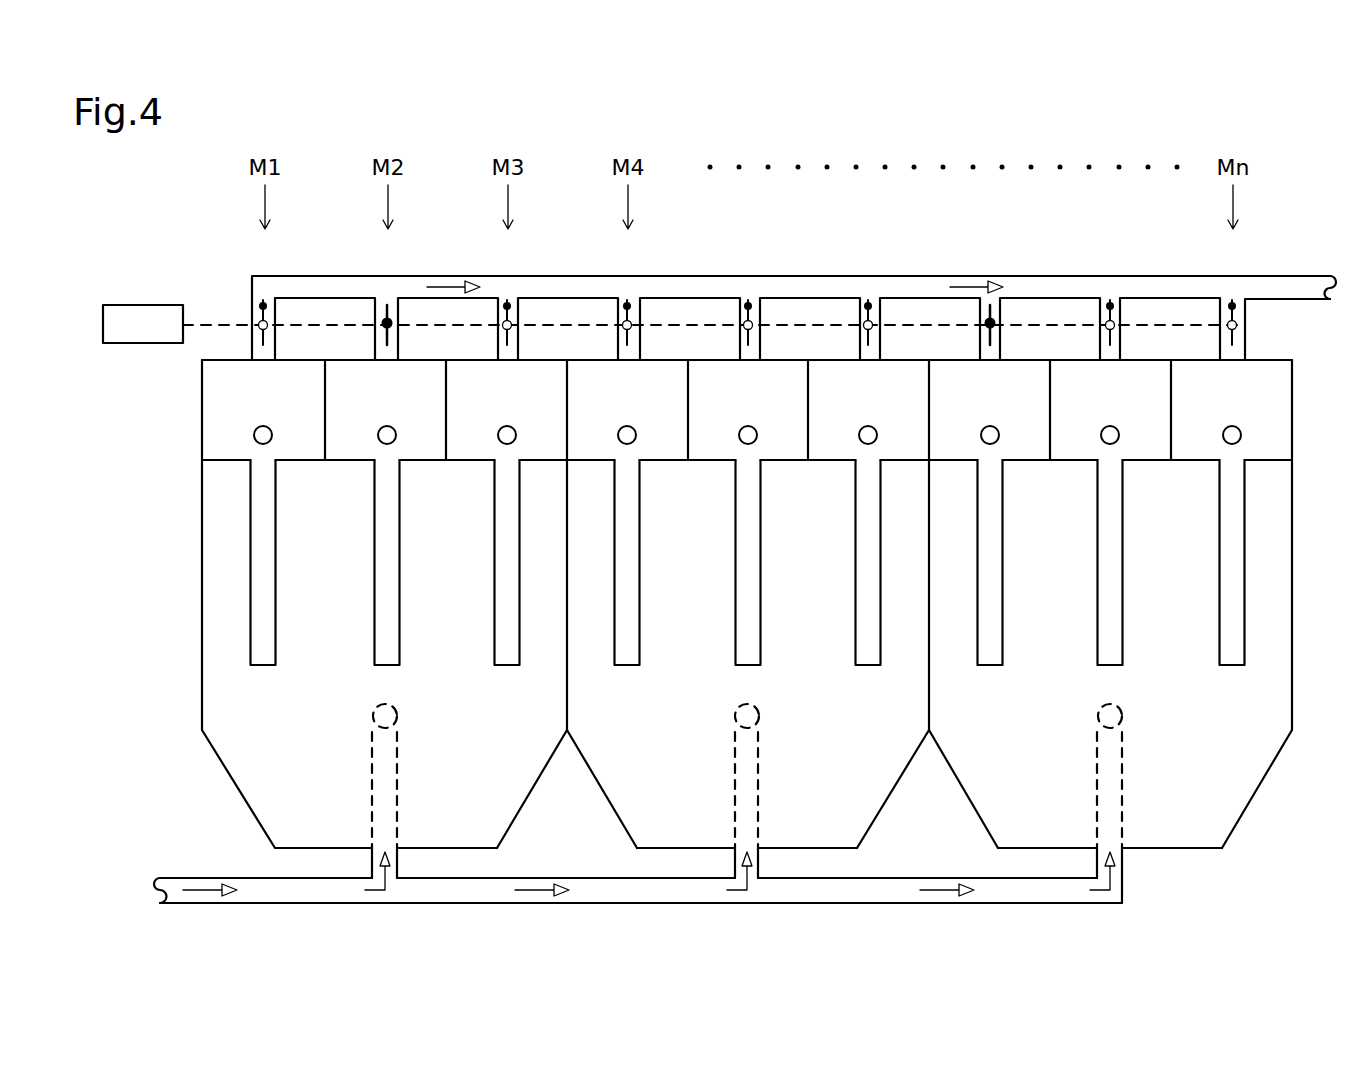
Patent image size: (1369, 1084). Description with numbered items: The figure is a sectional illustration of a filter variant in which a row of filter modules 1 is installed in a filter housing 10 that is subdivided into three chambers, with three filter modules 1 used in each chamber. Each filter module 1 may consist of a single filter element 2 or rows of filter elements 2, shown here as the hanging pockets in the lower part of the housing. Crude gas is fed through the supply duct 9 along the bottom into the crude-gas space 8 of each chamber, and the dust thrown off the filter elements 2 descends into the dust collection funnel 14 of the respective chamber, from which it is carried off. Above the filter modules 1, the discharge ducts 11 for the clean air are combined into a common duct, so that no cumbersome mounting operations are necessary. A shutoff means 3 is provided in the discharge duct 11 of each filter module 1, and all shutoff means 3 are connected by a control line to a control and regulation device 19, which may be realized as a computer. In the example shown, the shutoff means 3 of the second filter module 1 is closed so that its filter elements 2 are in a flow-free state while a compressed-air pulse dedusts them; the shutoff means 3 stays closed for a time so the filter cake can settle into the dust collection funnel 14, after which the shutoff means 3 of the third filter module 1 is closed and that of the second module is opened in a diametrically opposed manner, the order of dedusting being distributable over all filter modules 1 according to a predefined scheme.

The filter module 1 is at (1292, 418).
The filter element 2 is at (505, 537).
The shutoff means 3 is at (627, 306).
The crude-gas space 8 is at (497, 748).
The supply duct 9 is at (165, 890).
The filter housing 10 is at (202, 668).
The discharge duct 11 is at (623, 287).
The dust collection funnel 14 is at (535, 780).
The control and regulation device 19 is at (132, 315).